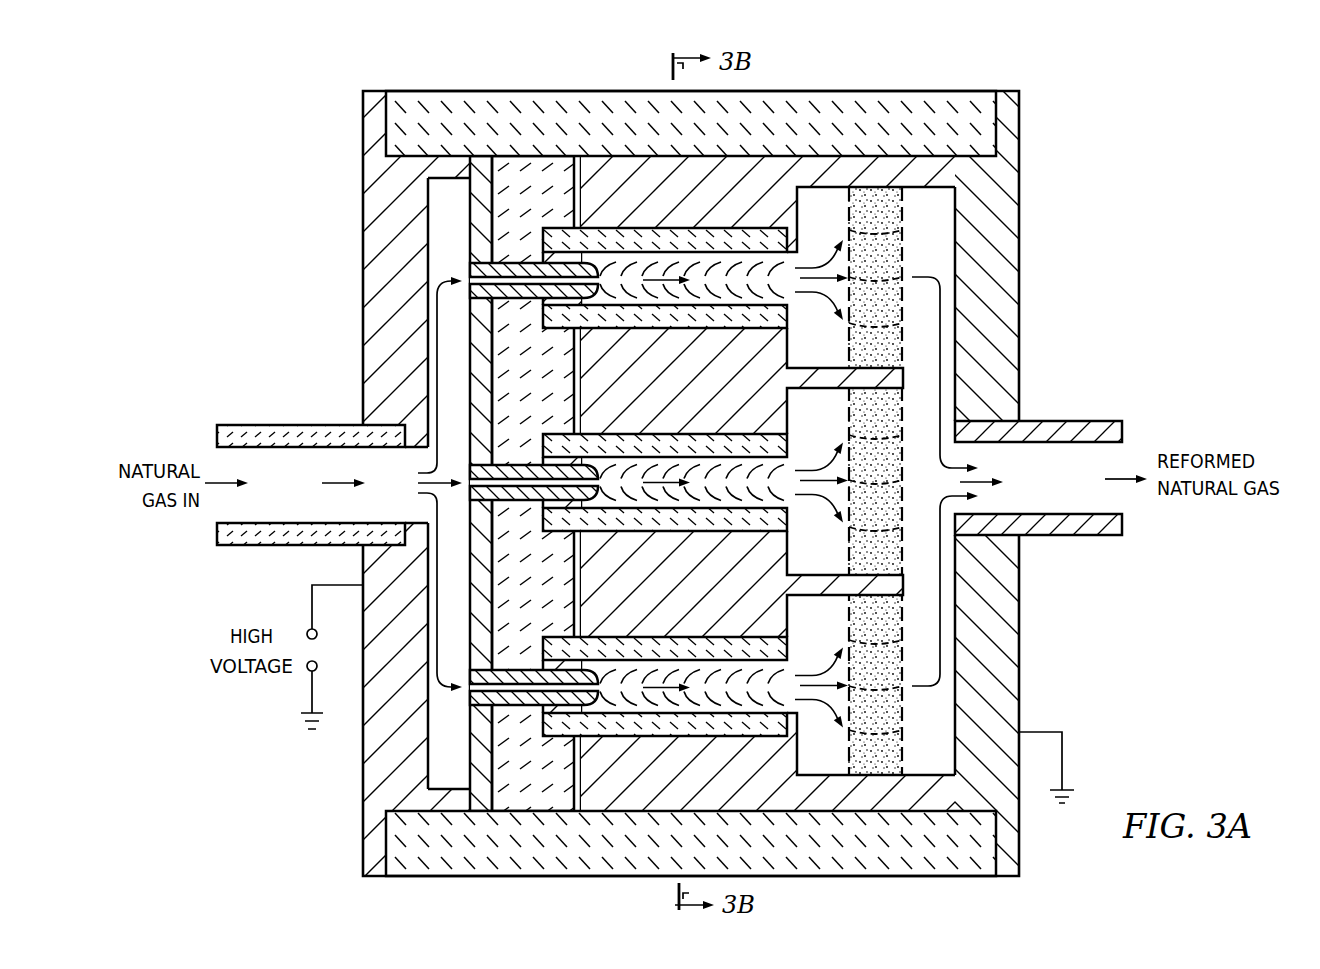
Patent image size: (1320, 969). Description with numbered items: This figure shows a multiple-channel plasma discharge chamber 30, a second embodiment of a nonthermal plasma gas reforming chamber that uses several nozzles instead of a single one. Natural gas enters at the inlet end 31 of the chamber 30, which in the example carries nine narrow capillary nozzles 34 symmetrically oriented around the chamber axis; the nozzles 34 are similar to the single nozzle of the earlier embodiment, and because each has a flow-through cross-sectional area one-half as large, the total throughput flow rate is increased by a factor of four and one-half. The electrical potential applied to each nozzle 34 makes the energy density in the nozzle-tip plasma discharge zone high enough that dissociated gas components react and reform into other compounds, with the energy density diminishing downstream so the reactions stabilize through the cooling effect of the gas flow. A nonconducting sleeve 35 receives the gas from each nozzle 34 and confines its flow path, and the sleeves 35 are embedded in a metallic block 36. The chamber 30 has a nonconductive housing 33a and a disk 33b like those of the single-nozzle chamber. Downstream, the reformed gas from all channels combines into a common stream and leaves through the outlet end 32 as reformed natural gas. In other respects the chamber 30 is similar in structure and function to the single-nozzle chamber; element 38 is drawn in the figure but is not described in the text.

The multiple-channel plasma discharge chamber 30 is at (1138, 86).
The inlet end 31 is at (365, 232).
The outlet end 32 is at (1019, 287).
The nonconductive housing 33a is at (903, 91).
The disk 33b is at (510, 745).
The capillary nozzles 34 is at (513, 262).
The nonconducting sleeve 35 is at (643, 232).
The metallic block 36 is at (748, 157).
The catalyst bed 38 is at (900, 708).